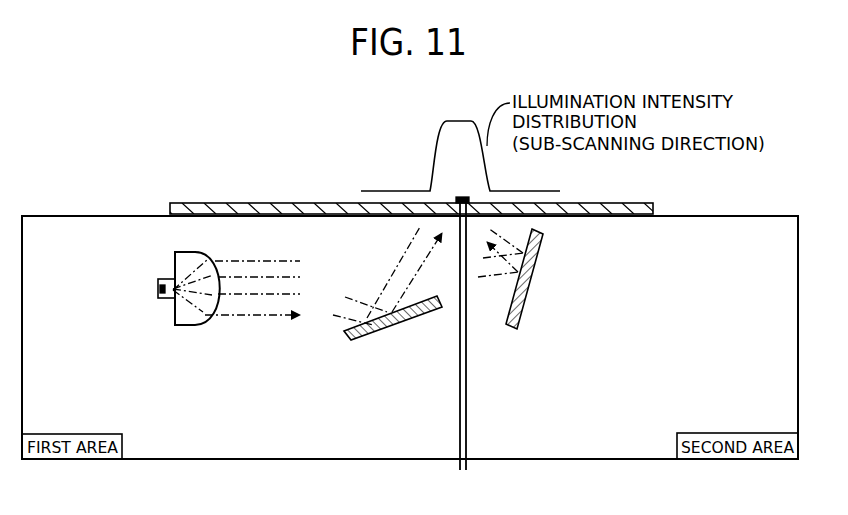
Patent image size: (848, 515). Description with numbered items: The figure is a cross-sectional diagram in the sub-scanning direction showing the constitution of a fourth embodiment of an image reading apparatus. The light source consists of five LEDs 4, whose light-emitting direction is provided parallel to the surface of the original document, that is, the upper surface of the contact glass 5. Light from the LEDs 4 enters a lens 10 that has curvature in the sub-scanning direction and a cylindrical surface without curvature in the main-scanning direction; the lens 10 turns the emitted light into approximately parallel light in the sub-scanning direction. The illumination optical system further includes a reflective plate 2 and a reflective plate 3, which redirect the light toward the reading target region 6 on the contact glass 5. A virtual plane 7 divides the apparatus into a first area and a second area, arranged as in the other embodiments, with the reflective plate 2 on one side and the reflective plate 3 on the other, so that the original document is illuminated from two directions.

The reflective plate 2 is at (388, 330).
The reflective plate 3 is at (532, 290).
The LED 4 is at (159, 283).
The contact glass 5 is at (293, 201).
The reading target region 6 is at (470, 198).
The virtual plane 7 is at (467, 348).
The lens 10 is at (205, 347).